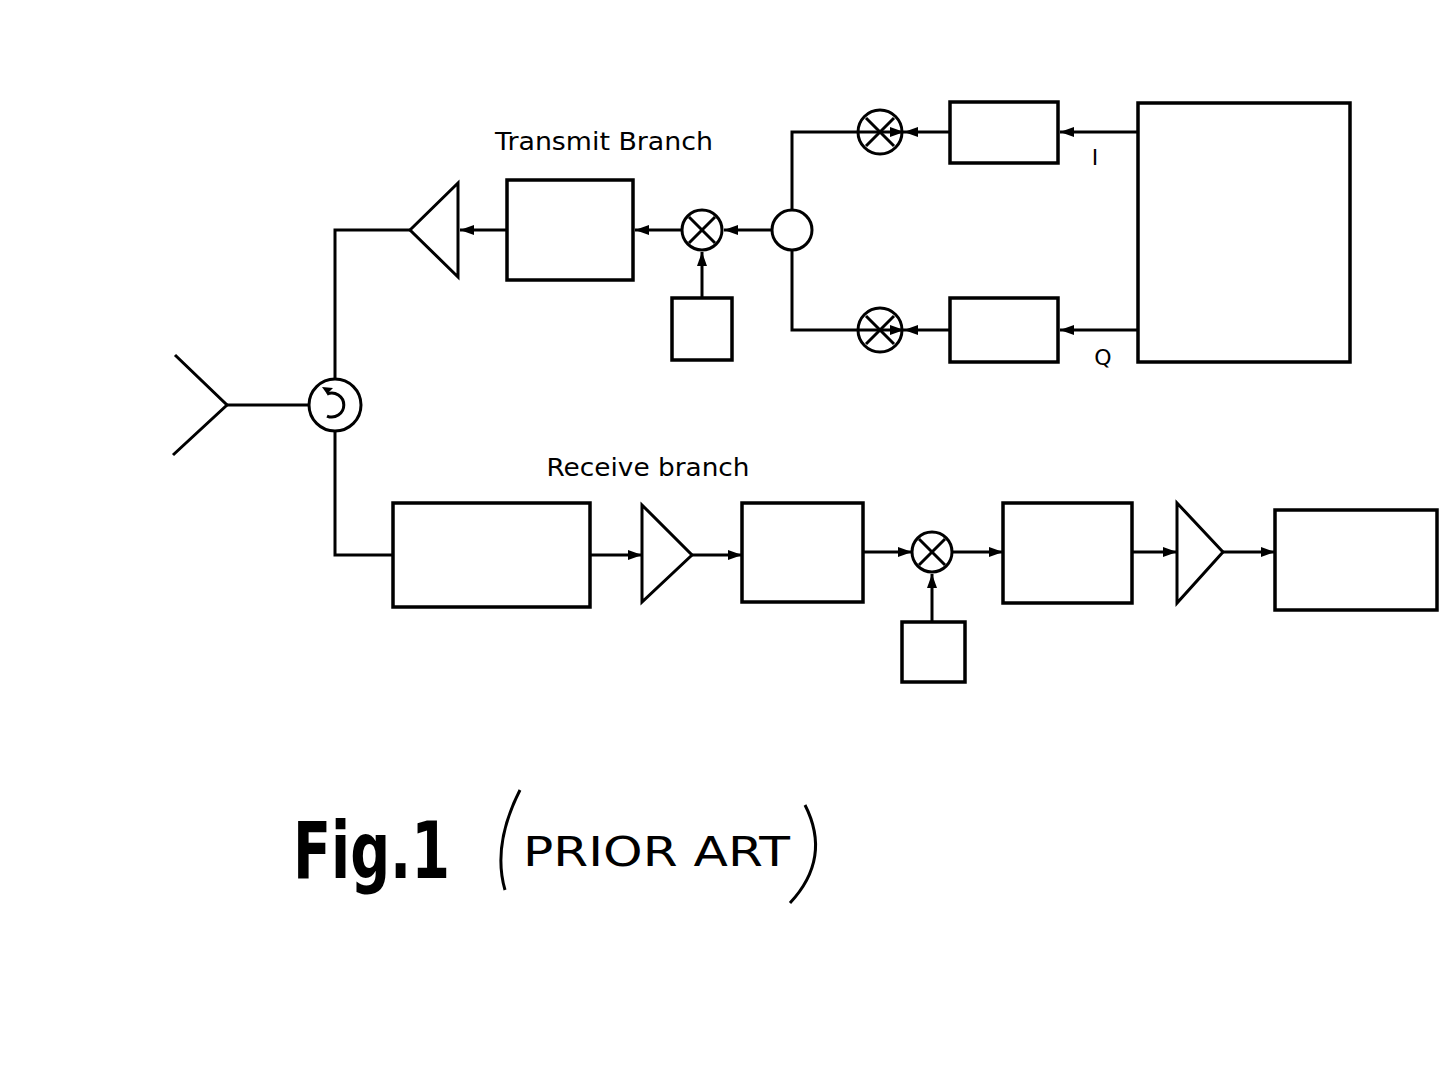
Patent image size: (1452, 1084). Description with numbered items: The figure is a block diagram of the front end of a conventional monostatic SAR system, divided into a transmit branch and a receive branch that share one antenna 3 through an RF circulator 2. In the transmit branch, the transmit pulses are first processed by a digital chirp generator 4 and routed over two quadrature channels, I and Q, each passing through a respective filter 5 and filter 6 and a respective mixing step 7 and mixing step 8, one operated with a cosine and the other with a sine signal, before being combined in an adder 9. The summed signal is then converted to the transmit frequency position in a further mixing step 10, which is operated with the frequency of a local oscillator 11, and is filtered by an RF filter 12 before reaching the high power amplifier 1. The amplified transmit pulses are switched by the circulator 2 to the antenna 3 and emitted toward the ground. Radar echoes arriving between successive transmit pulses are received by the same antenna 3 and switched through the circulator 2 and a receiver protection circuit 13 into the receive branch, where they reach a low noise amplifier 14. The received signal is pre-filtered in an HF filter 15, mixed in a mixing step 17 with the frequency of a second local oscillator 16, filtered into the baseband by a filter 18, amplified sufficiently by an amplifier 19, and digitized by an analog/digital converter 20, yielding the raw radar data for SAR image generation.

The high power amplifier 1 is at (434, 226).
The RF circulator 2 is at (356, 405).
The antenna 3 is at (241, 375).
The digital chirp generator 4 is at (1244, 198).
The filter 5 is at (1004, 101).
The filter 6 is at (1004, 302).
The mixing step 7 is at (880, 120).
The mixing step 8 is at (880, 323).
The adder 9 is at (809, 231).
The mixing step 10 is at (720, 211).
The local oscillator 11 is at (702, 354).
The RF filter 12 is at (570, 257).
The receiver protection circuit 13 is at (491, 528).
The low noise amplifier 14 is at (683, 575).
The HF filter 15 is at (802, 529).
The local oscillator 16 is at (906, 652).
The mixing step 17 is at (933, 525).
The filter 18 is at (1067, 530).
The amplifier 19 is at (1206, 533).
The analog/digital converter 20 is at (1356, 535).